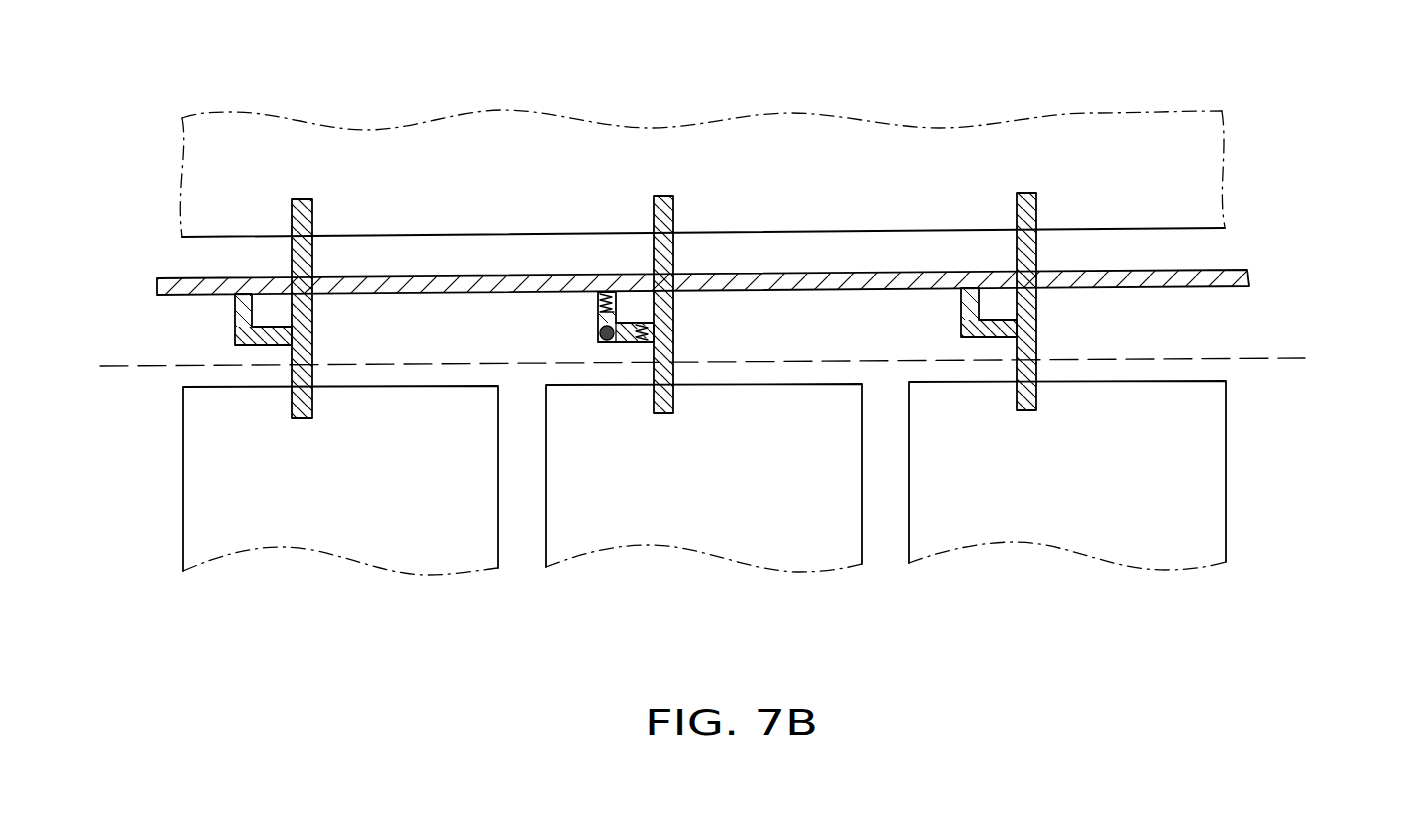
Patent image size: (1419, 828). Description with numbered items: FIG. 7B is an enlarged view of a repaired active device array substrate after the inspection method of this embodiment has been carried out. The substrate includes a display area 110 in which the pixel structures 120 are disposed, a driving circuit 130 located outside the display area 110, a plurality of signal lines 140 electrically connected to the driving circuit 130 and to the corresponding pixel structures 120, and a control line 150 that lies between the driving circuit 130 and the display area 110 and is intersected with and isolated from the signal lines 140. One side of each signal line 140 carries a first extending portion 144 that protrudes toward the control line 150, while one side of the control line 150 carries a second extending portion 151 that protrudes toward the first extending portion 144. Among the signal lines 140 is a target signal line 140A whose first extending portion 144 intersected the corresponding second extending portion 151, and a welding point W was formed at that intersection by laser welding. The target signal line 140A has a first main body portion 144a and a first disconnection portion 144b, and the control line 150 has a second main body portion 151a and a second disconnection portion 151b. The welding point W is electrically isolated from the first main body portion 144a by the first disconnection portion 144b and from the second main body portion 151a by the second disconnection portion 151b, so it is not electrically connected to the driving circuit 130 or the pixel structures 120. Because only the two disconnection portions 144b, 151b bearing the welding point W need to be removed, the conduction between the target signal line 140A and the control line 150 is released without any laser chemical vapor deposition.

The display area 110 is at (1277, 423).
The pixel structures 120 is at (335, 540).
The driving circuit 130 is at (1202, 187).
The signal lines 140 is at (307, 313).
The target signal line 140A is at (668, 308).
The first extending portion 144 is at (265, 339).
The first main body portion 144a is at (647, 344).
The first disconnection portion 144b is at (627, 344).
The control line 150 is at (1237, 270).
The second extending portion 151 is at (247, 313).
The second main body portion 151a is at (598, 293).
The second disconnection portion 151b is at (597, 313).
The welding point W is at (599, 333).